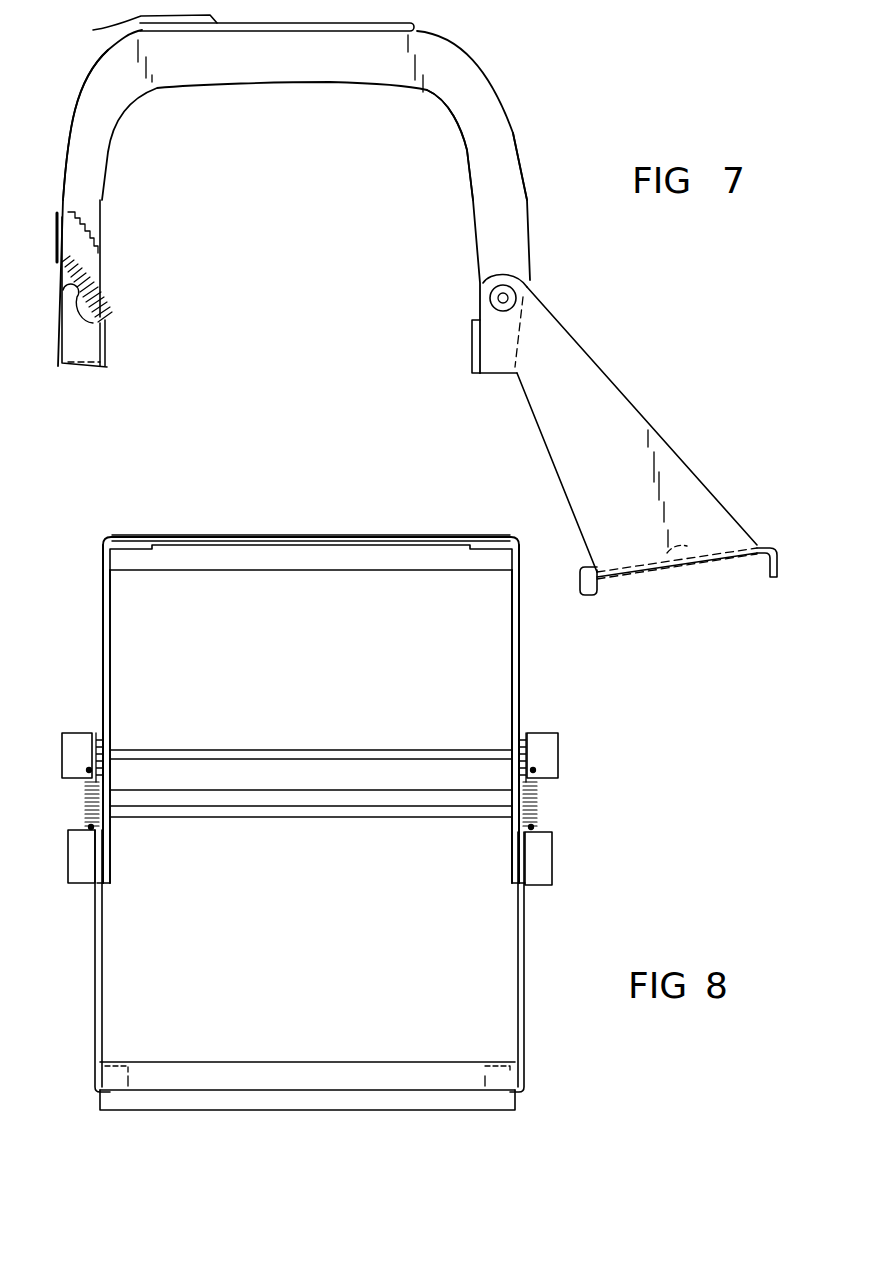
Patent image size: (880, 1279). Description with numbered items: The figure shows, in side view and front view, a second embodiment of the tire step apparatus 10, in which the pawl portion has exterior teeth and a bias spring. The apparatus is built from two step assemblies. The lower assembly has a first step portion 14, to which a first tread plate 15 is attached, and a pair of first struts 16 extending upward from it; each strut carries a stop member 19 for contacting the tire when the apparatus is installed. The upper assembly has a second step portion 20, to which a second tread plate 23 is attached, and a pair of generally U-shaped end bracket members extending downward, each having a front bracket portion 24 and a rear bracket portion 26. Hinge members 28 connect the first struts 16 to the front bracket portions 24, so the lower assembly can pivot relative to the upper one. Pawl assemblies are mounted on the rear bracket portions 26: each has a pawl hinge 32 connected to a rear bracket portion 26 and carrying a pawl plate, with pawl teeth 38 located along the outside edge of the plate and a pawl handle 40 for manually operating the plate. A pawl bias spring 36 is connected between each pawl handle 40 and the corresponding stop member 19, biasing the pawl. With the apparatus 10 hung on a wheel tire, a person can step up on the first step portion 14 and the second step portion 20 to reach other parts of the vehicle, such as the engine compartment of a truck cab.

In FIG. 7, the tire step apparatus 10 is at (560, 112).
In FIG. 8, the tire step apparatus 10 is at (165, 512).
In FIG. 7, the first step portion 14 is at (697, 567).
In FIG. 8, the first step portion 14 is at (300, 1061).
In FIG. 7, the first tread plate 15 is at (577, 567).
In FIG. 7, the first struts 16 is at (618, 395).
In FIG. 8, the first struts 16 is at (103, 1010).
In FIG. 7, the stop member 19 is at (480, 373).
In FIG. 8, the stop member 19 is at (77, 883).
In FIG. 7, the second step portion 20 is at (297, 65).
In FIG. 8, the second step portion 20 is at (256, 554).
In FIG. 7, the second tread plate 23 is at (141, 20).
In FIG. 7, the front bracket portion 24 is at (487, 155).
In FIG. 8, the front bracket portion 24 is at (113, 631).
In FIG. 7, the rear bracket portion 26 is at (98, 130).
In FIG. 7, the hinge members 28 is at (493, 297).
In FIG. 7, the pawl hinge 32 is at (93, 327).
In FIG. 7, the pawl bias spring 36 is at (83, 280).
In FIG. 8, the pawl bias spring 36 is at (88, 798).
In FIG. 7, the pawl teeth 38 is at (83, 232).
In FIG. 8, the pawl teeth 38 is at (110, 731).
In FIG. 8, the pawl handle 40 is at (70, 737).